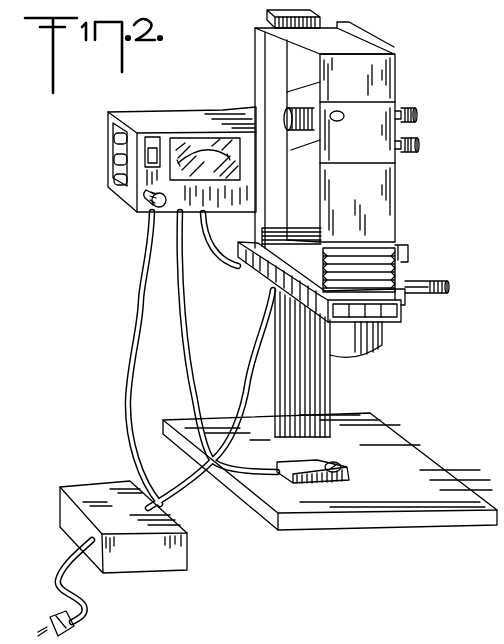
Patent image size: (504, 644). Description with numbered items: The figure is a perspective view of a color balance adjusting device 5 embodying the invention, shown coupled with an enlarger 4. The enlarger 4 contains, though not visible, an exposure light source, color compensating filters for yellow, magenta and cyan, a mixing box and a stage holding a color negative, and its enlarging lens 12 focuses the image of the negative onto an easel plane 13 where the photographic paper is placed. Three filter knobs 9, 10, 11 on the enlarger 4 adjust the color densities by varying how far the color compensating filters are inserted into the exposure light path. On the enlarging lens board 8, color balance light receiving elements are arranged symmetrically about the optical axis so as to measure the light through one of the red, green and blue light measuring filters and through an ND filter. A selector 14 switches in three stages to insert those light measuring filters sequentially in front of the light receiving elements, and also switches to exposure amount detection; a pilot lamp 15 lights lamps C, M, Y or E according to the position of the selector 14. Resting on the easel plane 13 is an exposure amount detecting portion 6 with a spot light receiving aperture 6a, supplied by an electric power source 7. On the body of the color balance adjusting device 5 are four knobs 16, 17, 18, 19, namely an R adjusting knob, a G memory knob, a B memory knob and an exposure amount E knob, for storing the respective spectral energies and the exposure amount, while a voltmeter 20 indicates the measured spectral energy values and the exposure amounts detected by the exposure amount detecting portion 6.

The enlarger 4 is at (383, 204).
The color balance adjusting device 5 is at (161, 115).
The exposure amount detecting portion 6 is at (316, 484).
The spot light receiving aperture 6a is at (336, 462).
The electric power source 7 is at (90, 487).
The enlarging lens board 8 is at (410, 297).
The filter knob 9 is at (306, 110).
The filter knob 10 is at (402, 108).
The filter knob 11 is at (407, 138).
The enlarging lens 12 is at (343, 354).
The easel plane 13 is at (419, 462).
The selector 14 is at (428, 280).
The pilot lamp 15 is at (401, 313).
The R adjusting knob 16 is at (147, 210).
The G memory knob 17 is at (111, 156).
The B memory knob 18 is at (111, 131).
The exposure amount E knob 19 is at (111, 182).
The voltmeter 20 is at (188, 165).